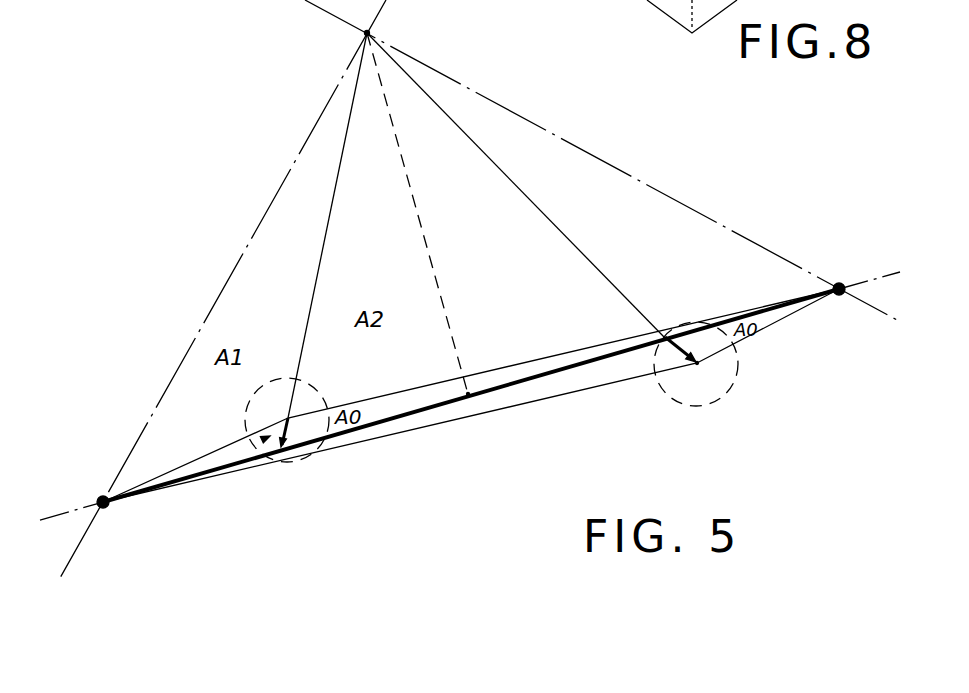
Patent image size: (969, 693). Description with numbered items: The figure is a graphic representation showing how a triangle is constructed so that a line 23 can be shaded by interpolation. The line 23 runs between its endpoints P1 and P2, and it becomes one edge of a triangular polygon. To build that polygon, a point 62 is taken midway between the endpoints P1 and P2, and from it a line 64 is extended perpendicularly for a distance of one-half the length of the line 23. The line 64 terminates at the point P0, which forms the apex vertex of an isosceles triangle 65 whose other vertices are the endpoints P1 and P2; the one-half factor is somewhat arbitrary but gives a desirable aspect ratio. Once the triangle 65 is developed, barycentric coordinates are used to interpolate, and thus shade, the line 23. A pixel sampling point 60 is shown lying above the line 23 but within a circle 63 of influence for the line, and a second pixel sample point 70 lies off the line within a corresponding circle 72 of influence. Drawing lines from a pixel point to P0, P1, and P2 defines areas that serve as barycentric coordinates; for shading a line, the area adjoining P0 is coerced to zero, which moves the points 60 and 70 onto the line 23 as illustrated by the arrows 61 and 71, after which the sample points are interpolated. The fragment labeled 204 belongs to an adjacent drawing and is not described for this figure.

In FIG. 5, the line 23 is at (548, 378).
In FIG. 5, the pixel sampling point 60 is at (288, 418).
In FIG. 5, the arrow 61 is at (288, 418).
In FIG. 5, the point 62 is at (470, 392).
In FIG. 5, the circle of influence 63 is at (298, 470).
In FIG. 5, the line 64 is at (415, 190).
In FIG. 5, the triangle 65 is at (516, 185).
In FIG. 5, the pixel sample point 70 is at (699, 364).
In FIG. 5, the arrow 71 is at (674, 356).
In FIG. 5, the circle of influence 72 is at (712, 402).
In FIG. 8, the element of FIG. 8 204 is at (601, 18).
In FIG. 5, the point P0 is at (367, 33).
In FIG. 5, the endpoint P1 is at (839, 289).
In FIG. 5, the endpoint P2 is at (103, 502).